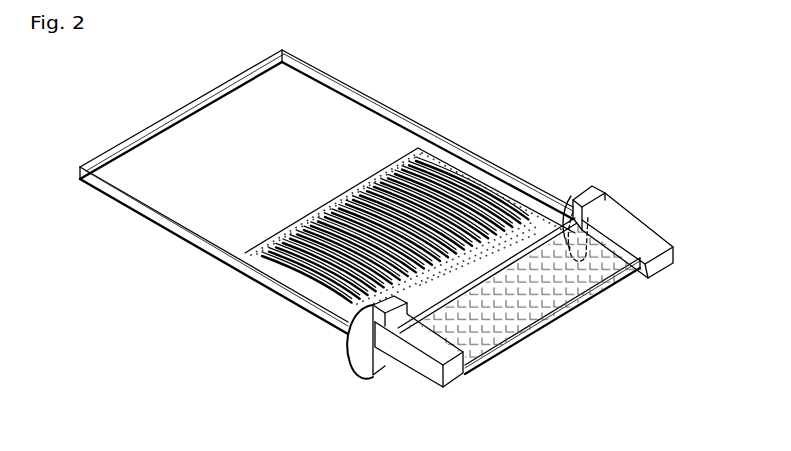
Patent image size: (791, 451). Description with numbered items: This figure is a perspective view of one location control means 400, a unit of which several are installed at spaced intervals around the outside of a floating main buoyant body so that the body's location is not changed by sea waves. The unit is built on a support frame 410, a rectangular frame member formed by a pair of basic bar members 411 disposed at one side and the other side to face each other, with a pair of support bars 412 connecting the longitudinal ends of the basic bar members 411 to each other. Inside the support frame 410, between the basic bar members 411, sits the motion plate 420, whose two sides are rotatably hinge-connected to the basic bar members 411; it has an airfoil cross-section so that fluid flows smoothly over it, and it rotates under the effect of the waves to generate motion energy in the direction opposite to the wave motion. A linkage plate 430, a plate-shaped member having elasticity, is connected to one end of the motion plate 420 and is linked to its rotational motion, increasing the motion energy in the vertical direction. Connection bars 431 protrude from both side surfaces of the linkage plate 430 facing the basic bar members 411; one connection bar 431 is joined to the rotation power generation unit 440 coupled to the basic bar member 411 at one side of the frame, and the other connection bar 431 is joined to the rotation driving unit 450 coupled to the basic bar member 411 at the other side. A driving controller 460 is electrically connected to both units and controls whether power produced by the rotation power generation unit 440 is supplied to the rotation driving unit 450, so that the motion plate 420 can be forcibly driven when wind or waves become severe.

The location control means 400 is at (512, 110).
The support frame 410 is at (148, 321).
The basic bar members 411 is at (343, 93).
The support bars 412 is at (107, 149).
The motion plate 420 is at (418, 150).
The linkage plate 430 is at (562, 284).
The connection bars 431 is at (532, 242).
The rotation power generation unit 440 is at (433, 347).
The rotation driving unit 450 is at (660, 250).
The driving controller 460 is at (345, 316).